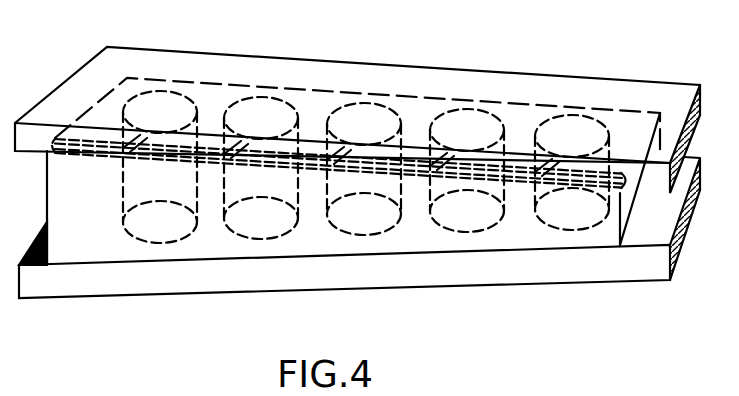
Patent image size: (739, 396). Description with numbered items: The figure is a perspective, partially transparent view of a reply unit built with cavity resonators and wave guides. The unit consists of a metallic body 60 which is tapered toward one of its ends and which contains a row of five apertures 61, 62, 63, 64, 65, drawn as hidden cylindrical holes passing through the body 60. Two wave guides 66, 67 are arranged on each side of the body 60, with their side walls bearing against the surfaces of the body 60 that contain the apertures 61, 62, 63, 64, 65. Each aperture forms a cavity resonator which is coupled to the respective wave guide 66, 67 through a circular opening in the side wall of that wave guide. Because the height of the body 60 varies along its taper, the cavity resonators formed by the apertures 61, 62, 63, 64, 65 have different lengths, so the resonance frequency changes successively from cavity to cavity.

The metallic body 60 is at (110, 243).
The aperture 61 is at (168, 227).
The aperture 62 is at (262, 222).
The aperture 63 is at (369, 217).
The aperture 64 is at (467, 213).
The aperture 65 is at (572, 213).
The wave guide 66 is at (49, 282).
The wave guide 67 is at (167, 66).